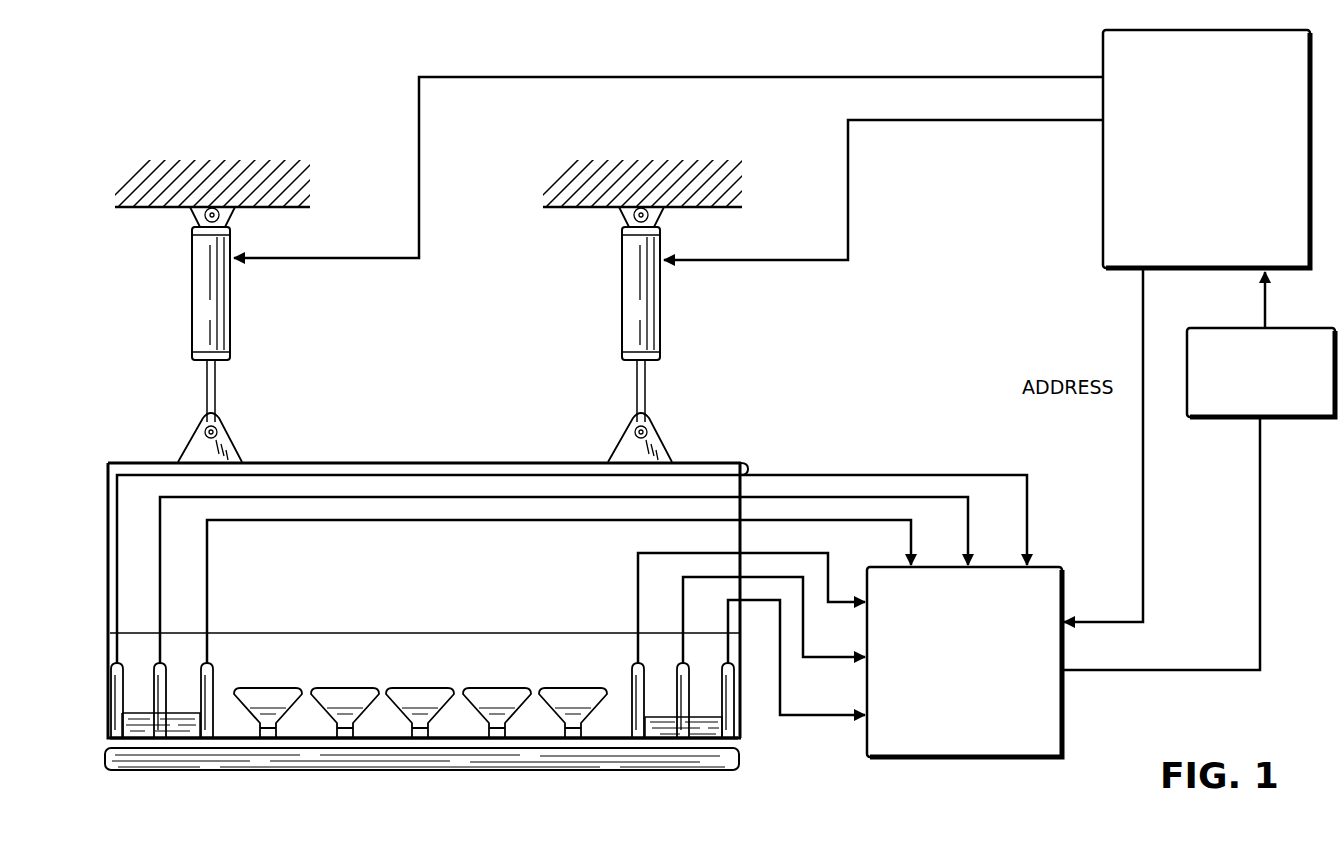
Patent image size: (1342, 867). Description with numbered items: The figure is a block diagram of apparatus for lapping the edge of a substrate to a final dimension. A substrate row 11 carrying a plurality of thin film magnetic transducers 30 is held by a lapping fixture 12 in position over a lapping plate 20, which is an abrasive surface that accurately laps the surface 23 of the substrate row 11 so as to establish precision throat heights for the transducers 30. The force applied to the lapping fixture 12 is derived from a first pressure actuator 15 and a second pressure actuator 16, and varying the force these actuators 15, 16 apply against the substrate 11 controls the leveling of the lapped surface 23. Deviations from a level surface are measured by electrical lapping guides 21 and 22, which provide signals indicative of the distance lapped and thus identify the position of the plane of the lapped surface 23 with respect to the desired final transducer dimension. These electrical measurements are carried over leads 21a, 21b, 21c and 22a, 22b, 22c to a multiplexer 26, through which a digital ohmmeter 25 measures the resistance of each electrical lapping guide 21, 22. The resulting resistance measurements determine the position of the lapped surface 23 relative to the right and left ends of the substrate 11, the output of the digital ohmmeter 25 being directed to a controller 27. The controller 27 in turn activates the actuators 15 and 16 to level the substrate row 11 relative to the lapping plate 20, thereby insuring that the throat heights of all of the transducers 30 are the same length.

The substrate row 11 is at (392, 667).
The lapping fixture 12 is at (455, 465).
The first pressure actuator 15 is at (662, 322).
The second pressure actuator 16 is at (232, 322).
The lapping plate 20 is at (492, 762).
The electrical lapping guide 21 is at (672, 733).
The electrode lead 21a is at (774, 633).
The electrode lead 21b is at (796, 673).
The electrode lead 21c is at (751, 608).
The electrical lapping guide 22 is at (160, 737).
The electrode lead 22a is at (588, 580).
The electrode lead 22b is at (595, 569).
The electrode lead 22c is at (581, 591).
The lapped surface 23 is at (300, 742).
The digital ohmmeter 25 is at (1282, 420).
The multiplexer 26 is at (985, 760).
The controller 27 is at (1102, 185).
The thin film magnetic transducer 30 is at (270, 694).